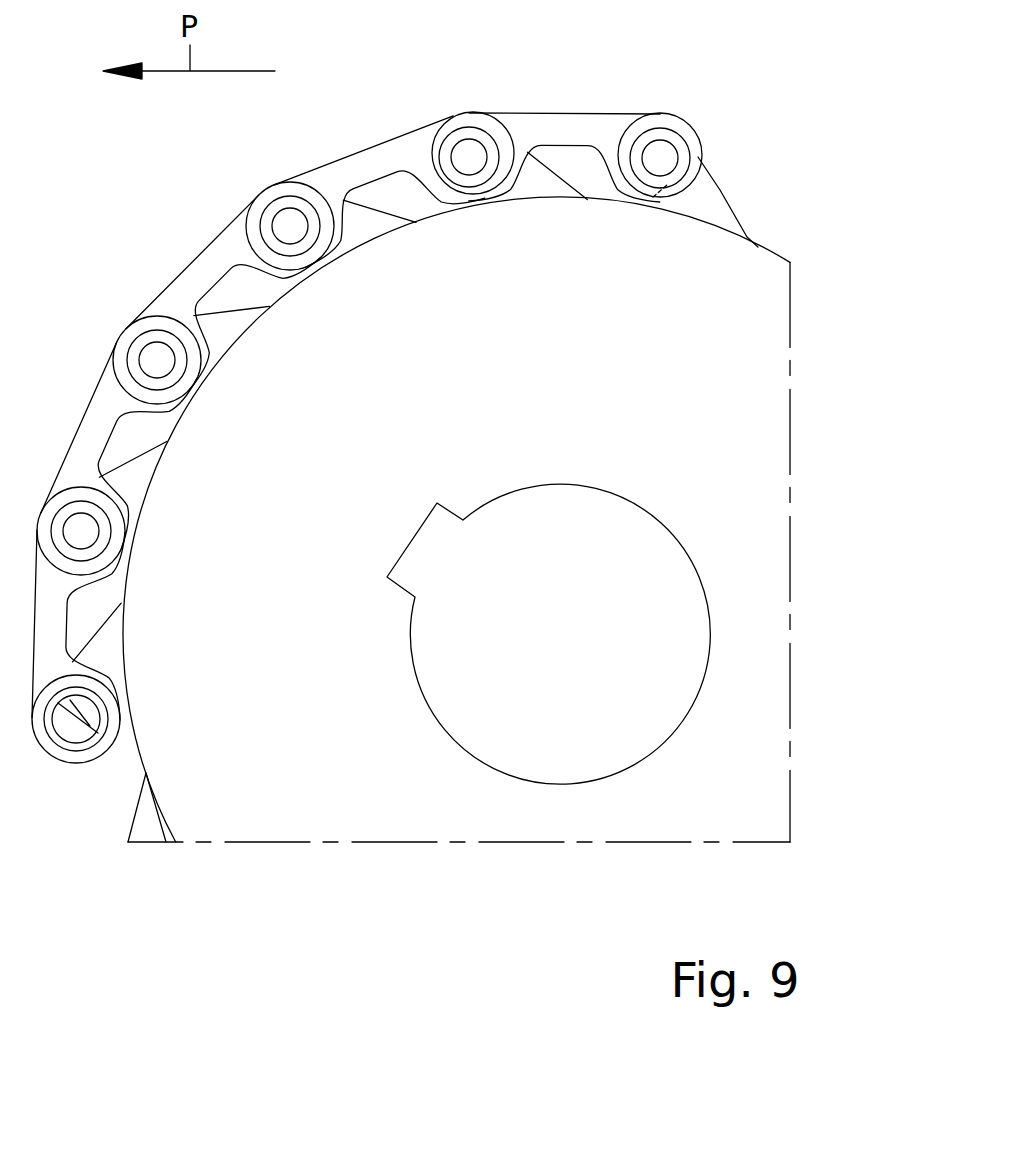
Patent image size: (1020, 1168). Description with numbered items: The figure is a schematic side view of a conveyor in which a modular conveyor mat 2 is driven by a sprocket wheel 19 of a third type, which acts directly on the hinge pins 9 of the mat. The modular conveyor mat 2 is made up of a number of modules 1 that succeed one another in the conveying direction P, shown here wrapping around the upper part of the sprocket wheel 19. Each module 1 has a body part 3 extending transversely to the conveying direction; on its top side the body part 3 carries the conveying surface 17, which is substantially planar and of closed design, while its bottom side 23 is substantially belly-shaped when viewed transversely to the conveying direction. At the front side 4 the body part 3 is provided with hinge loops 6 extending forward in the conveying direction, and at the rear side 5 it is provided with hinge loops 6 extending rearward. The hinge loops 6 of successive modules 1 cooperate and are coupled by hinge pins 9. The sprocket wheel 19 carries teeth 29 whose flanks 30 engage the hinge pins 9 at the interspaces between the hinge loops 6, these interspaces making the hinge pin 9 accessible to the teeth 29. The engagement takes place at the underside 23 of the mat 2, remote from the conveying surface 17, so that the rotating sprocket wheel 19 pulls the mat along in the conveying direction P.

The module 1 is at (166, 306).
The modular conveyor mat 2 is at (180, 233).
The body part 3 is at (578, 130).
The front side 4 is at (443, 116).
The rear side 5 is at (683, 140).
The hinge loop 6 is at (692, 134).
The hinge pin 9 is at (469, 157).
The conveying surface 17 is at (345, 157).
The sprocket wheel 19 is at (706, 364).
The bottom side 23 is at (415, 223).
The tooth 29 is at (708, 205).
The flank 30 is at (655, 191).